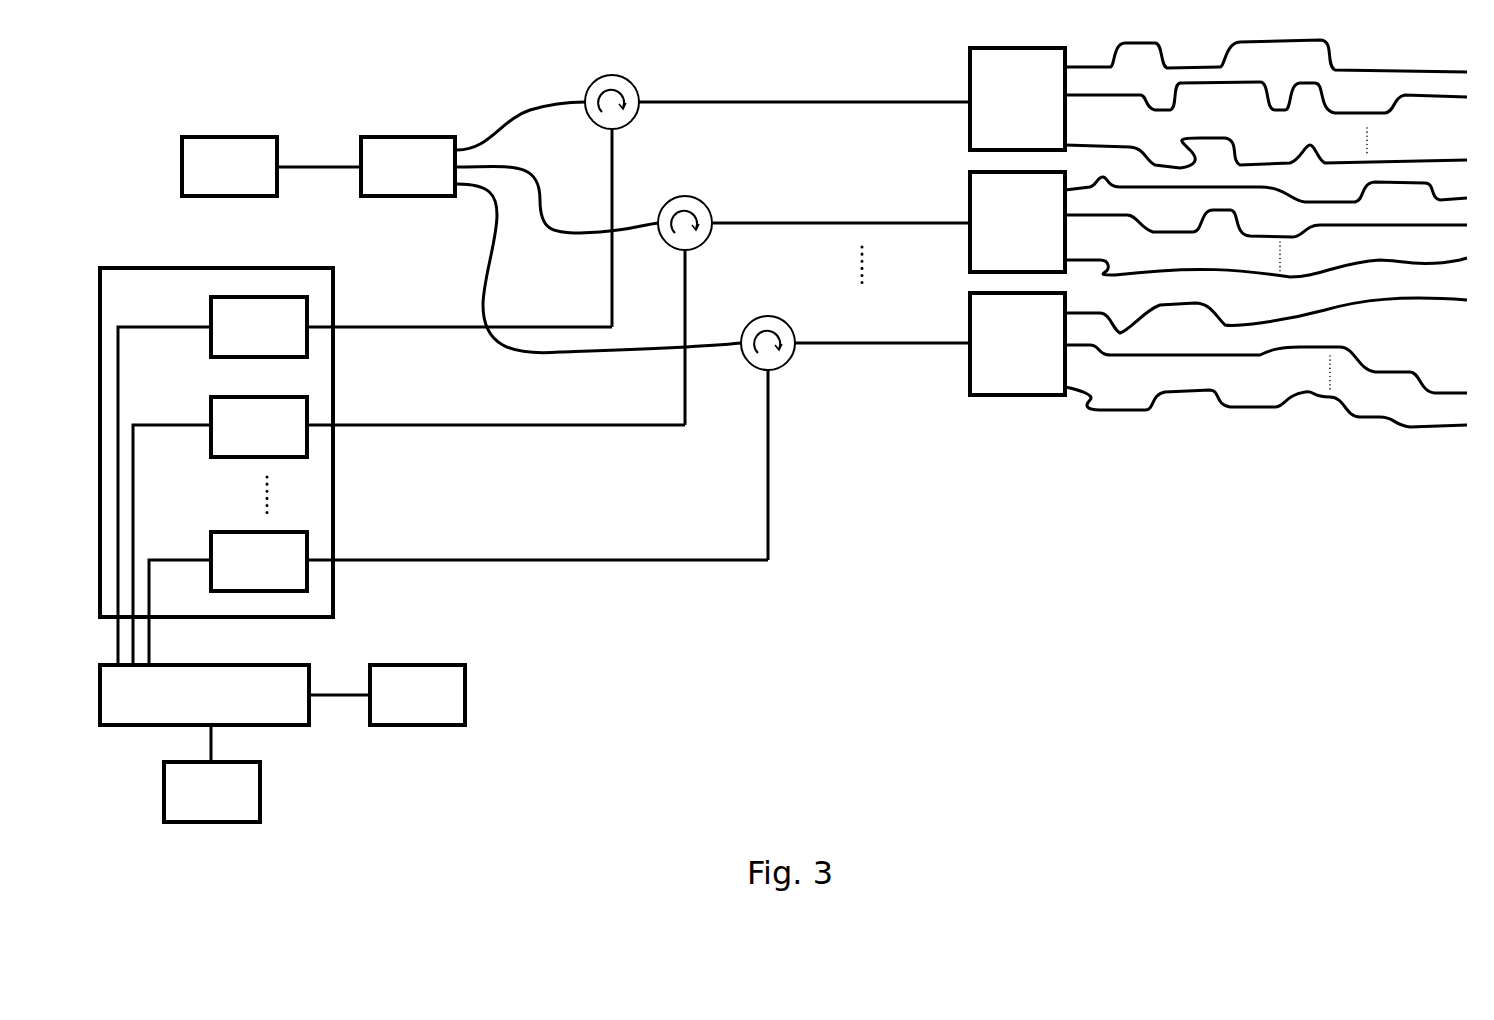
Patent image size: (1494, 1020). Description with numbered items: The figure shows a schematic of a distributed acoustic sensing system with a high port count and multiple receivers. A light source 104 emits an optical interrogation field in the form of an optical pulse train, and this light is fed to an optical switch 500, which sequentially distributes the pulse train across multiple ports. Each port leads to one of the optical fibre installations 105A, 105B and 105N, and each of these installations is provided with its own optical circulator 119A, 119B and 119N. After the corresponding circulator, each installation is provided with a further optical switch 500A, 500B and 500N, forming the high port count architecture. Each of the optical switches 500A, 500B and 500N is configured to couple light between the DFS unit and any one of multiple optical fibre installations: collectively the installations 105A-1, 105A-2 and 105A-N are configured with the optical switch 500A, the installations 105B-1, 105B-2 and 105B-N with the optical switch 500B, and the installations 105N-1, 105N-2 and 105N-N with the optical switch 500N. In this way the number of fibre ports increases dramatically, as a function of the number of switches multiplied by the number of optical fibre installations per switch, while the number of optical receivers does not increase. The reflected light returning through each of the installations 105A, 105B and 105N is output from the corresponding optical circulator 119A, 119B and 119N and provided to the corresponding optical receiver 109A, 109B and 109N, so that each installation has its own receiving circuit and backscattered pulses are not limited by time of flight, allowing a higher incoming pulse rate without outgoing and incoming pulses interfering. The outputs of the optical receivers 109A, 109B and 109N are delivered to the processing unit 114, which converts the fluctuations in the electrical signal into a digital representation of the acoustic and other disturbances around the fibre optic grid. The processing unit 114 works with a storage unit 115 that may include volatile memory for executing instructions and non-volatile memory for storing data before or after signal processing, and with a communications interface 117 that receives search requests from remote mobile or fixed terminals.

The light source 104 is at (271, 166).
The optical switch 500 is at (551, 227).
The optical circulator 119A is at (610, 191).
The optical circulator 119B is at (710, 303).
The optical circulator 119N is at (753, 430).
The optical fibre installation 105A is at (804, 90).
The optical fibre installation 105B is at (841, 211).
The optical fibre installation 105N is at (882, 333).
The optical switch 500A is at (1017, 99).
The optical switch 500B is at (1017, 222).
The optical switch 500N is at (1017, 344).
The optical fibre installation 105A-1 is at (1266, 56).
The optical fibre installation 105A-2 is at (1266, 99).
The optical fibre installation 105A-N is at (1266, 153).
The optical fibre installation 105B-1 is at (1266, 189).
The optical fibre installation 105B-2 is at (1266, 222).
The optical fibre installation 105B-N is at (1266, 260).
The optical fibre installation 105N-1 is at (1266, 315).
The optical fibre installation 105N-2 is at (1266, 369).
The optical fibre installation 105N-N is at (1266, 407).
The optical receiver 109A is at (365, 481).
The optical receiver 109B is at (409, 531).
The optical receiver 109N is at (458, 598).
The processing unit 114 is at (204, 695).
The storage unit 115 is at (387, 695).
The communications interface 117 is at (212, 773).